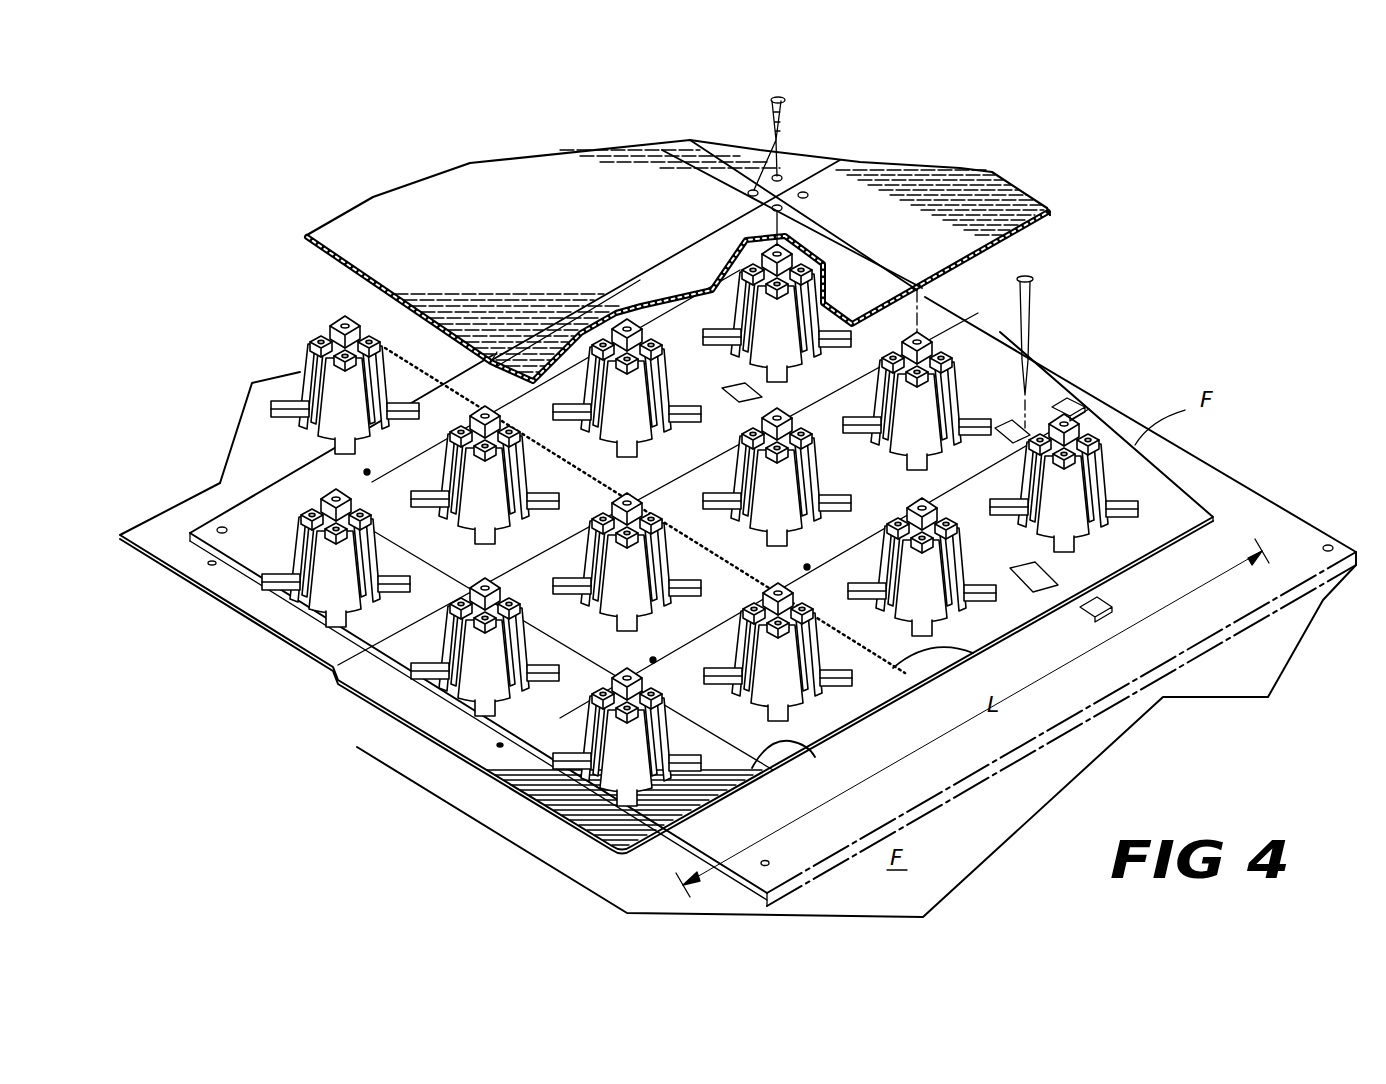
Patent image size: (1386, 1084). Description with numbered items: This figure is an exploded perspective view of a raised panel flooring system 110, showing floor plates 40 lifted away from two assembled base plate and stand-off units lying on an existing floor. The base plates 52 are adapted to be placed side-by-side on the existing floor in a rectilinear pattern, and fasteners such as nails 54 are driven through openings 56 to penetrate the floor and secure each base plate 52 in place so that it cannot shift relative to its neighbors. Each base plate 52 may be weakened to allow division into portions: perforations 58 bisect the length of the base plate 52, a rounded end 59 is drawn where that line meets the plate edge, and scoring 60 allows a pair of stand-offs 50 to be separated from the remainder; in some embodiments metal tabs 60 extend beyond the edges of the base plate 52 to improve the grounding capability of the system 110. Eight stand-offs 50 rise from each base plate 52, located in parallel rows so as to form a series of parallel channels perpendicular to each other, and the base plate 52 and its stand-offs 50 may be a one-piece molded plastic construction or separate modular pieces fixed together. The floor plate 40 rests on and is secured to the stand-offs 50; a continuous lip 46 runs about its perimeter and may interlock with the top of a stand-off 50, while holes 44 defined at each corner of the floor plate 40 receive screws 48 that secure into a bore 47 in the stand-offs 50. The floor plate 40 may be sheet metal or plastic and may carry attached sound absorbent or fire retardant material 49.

The floor plate 40 is at (445, 175).
The holes 44 is at (752, 190).
The continuous lip 46 is at (488, 357).
The bore 47 is at (800, 262).
The screws 48 is at (786, 118).
The sound absorbent or fire retardant material 49 is at (1035, 255).
The stand-offs 50 is at (306, 352).
The base plates 52 is at (666, 593).
The nails 54 is at (1040, 318).
The openings 56 is at (367, 472).
The perforations 58 is at (965, 652).
The rounded end 59 is at (812, 748).
The scoring 60 is at (1070, 410).
The system 110 is at (1125, 192).